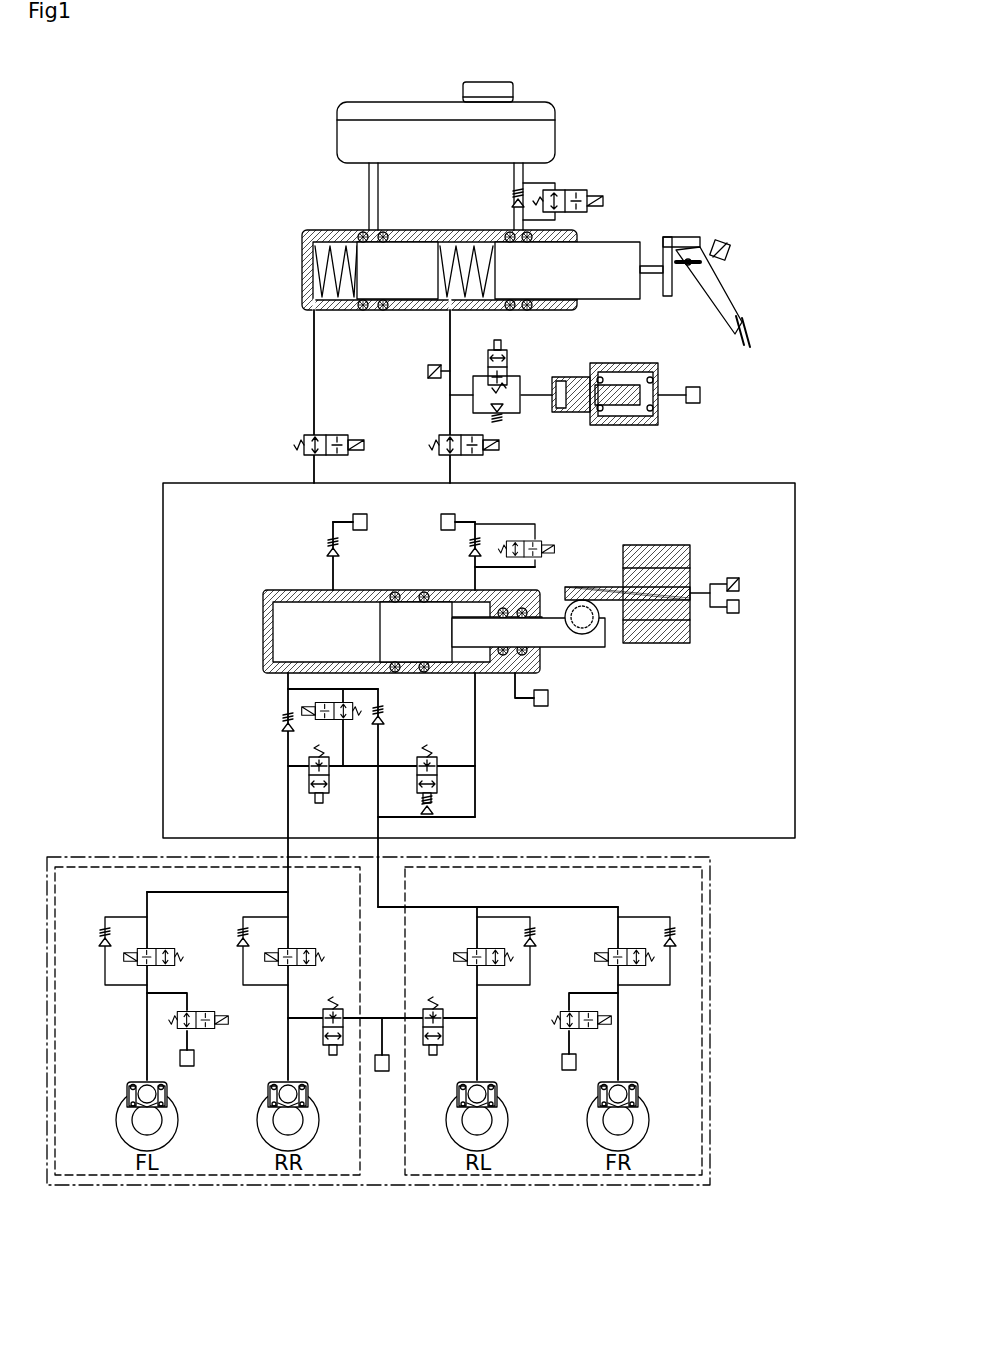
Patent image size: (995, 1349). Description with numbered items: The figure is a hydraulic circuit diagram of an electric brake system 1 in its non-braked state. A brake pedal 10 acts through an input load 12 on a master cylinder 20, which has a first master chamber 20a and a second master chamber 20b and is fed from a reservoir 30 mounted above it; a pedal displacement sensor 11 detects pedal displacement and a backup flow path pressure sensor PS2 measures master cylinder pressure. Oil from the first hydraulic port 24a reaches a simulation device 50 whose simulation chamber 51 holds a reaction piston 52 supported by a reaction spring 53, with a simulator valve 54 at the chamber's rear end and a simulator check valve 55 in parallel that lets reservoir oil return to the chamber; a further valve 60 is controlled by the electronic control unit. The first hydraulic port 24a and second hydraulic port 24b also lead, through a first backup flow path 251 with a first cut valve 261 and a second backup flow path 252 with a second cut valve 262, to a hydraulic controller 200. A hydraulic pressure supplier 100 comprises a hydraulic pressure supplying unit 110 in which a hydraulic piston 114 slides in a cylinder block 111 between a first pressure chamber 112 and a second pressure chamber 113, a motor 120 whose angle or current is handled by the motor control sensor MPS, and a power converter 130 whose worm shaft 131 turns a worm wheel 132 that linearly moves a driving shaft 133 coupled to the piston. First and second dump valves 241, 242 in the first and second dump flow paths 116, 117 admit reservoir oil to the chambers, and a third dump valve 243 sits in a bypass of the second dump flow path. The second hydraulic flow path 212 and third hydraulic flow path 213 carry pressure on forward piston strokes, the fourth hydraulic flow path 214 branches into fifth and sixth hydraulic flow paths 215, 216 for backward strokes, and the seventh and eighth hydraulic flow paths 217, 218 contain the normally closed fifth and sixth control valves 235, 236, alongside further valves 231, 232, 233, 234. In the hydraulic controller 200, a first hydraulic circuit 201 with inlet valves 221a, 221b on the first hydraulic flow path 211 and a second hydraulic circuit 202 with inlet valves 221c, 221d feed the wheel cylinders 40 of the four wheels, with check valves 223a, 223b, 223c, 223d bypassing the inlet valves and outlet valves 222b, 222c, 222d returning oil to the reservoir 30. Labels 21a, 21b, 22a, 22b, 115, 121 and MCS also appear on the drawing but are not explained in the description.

The electric brake system 1 is at (323, 58).
The brake pedal 10 is at (702, 290).
The pedal displacement sensor 11 is at (728, 243).
The input load 12 is at (652, 265).
The master cylinder 20 is at (302, 247).
The first master chamber 20a is at (478, 250).
The second master chamber 20b is at (350, 244).
The first piston 21a is at (616, 250).
The second piston 21b is at (468, 306).
The second piston body 22a is at (412, 250).
The second spring 22b is at (316, 272).
The first hydraulic port 24a is at (448, 314).
The second hydraulic port 24b is at (310, 312).
The reservoir 30 is at (372, 102).
The wheel cylinder 40 is at (168, 1096).
The simulation device 50 is at (657, 360).
The simulation chamber 51 is at (638, 363).
The reaction piston 52 is at (572, 380).
The reaction spring 53 is at (596, 375).
The simulator valve 54 is at (509, 350).
The simulator check valve 55 is at (505, 418).
The valve 60 is at (590, 192).
The hydraulic pressure supplier 100 is at (253, 545).
The hydraulic pressure supplying unit 110 is at (258, 588).
The cylinder block 111 is at (272, 608).
The first pressure chamber 112 is at (288, 635).
The second pressure chamber 113 is at (502, 674).
The hydraulic piston 114 is at (440, 604).
The sealing members 115 is at (397, 592).
The first dump flow path 116 is at (333, 566).
The second dump flow path 117 is at (485, 576).
The motor 120 is at (683, 538).
The motor housing 121 is at (683, 642).
The power converter 130 is at (606, 582).
The worm shaft 131 is at (582, 586).
The worm wheel 132 is at (600, 622).
The driving shaft 133 is at (592, 645).
The hydraulic controller 200 is at (478, 1228).
The first hydraulic circuit 201 is at (472, 1178).
The second hydraulic circuit 202 is at (318, 1178).
The first hydraulic flow path 211 is at (288, 680).
The second hydraulic flow path 212 is at (375, 686).
The third hydraulic flow path 213 is at (288, 760).
The fourth hydraulic flow path 214 is at (478, 722).
The fifth hydraulic flow path 215 is at (478, 760).
The sixth hydraulic flow path 216 is at (475, 812).
The seventh hydraulic flow path 217 is at (365, 798).
The eighth hydraulic flow path 218 is at (343, 722).
The inlet valve 221a is at (631, 946).
The inlet valve 221b is at (490, 946).
The inlet valve 221c is at (311, 946).
The inlet valve 221d is at (172, 946).
The outlet valve 222b is at (436, 998).
The outlet valve 222c is at (343, 986).
The outlet valve 222d is at (214, 1032).
The check valve 223a is at (678, 948).
The check valve 223b is at (534, 952).
The check valve 223c is at (243, 952).
The check valve 223d is at (103, 932).
The valve 231 is at (384, 720).
The valve 232 is at (280, 726).
The valve 233 is at (428, 756).
The valve 234 is at (433, 812).
The fifth control valve 235 is at (315, 800).
The sixth control valve 236 is at (310, 706).
The first dump valve 241 is at (330, 544).
The second dump valve 242 is at (478, 542).
The third dump valve 243 is at (522, 540).
The first backup flow path 251 is at (450, 348).
The second backup flow path 252 is at (313, 352).
The first cut valve 261 is at (438, 438).
The second cut valve 262 is at (297, 440).
The backup flow path pressure sensor PS2 is at (428, 371).
The motor control sensor MPS is at (740, 582).
The motor current sensor MCS is at (740, 613).